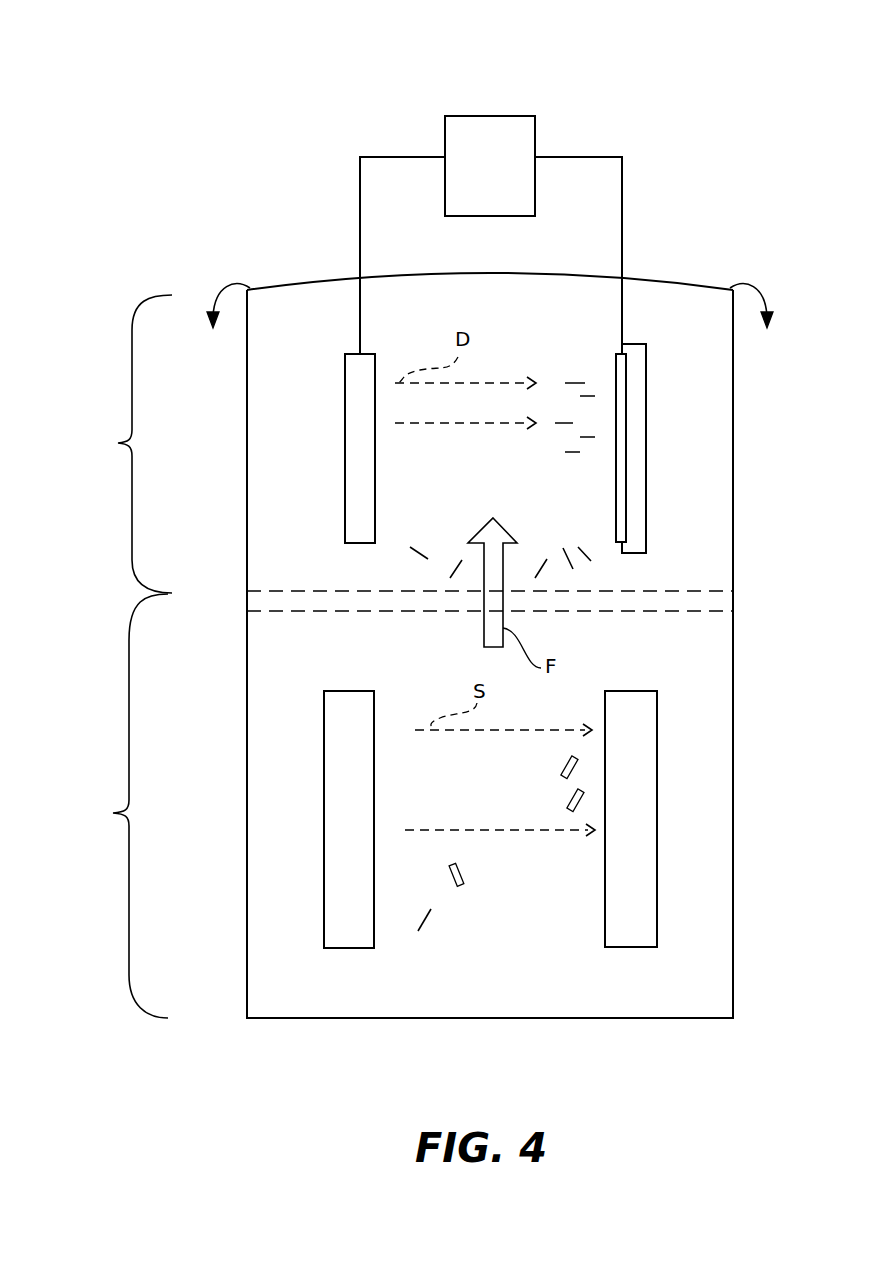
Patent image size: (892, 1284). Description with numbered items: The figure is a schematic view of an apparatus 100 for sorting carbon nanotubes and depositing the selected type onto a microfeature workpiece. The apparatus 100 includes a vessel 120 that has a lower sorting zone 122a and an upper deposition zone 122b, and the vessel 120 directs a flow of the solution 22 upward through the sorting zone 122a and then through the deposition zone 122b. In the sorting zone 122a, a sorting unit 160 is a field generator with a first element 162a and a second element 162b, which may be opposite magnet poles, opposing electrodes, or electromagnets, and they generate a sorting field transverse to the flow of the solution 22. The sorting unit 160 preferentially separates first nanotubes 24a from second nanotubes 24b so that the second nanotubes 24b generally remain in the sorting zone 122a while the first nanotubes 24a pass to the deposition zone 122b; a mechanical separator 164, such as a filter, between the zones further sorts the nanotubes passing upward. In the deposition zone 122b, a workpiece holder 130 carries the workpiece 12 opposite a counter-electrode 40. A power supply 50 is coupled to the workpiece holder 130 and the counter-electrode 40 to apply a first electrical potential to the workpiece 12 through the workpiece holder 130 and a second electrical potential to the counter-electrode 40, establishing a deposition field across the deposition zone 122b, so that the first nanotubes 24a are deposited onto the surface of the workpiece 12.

The apparatus 100 is at (657, 58).
The power supply 50 is at (490, 116).
The solution 22 is at (645, 288).
The workpiece 12 is at (623, 406).
The counter-electrode 40 is at (352, 444).
The workpiece holder 130 is at (636, 470).
The first nanotubes 24a is at (565, 424).
The mechanical separator 164 is at (708, 590).
The deposition zone 122b is at (118, 444).
The sorting zone 122a is at (113, 813).
The first element 162a is at (340, 890).
The second element 162b is at (645, 898).
The vessel 120 is at (733, 795).
The second nanotubes 24b is at (566, 762).
The sorting unit 160 is at (631, 958).